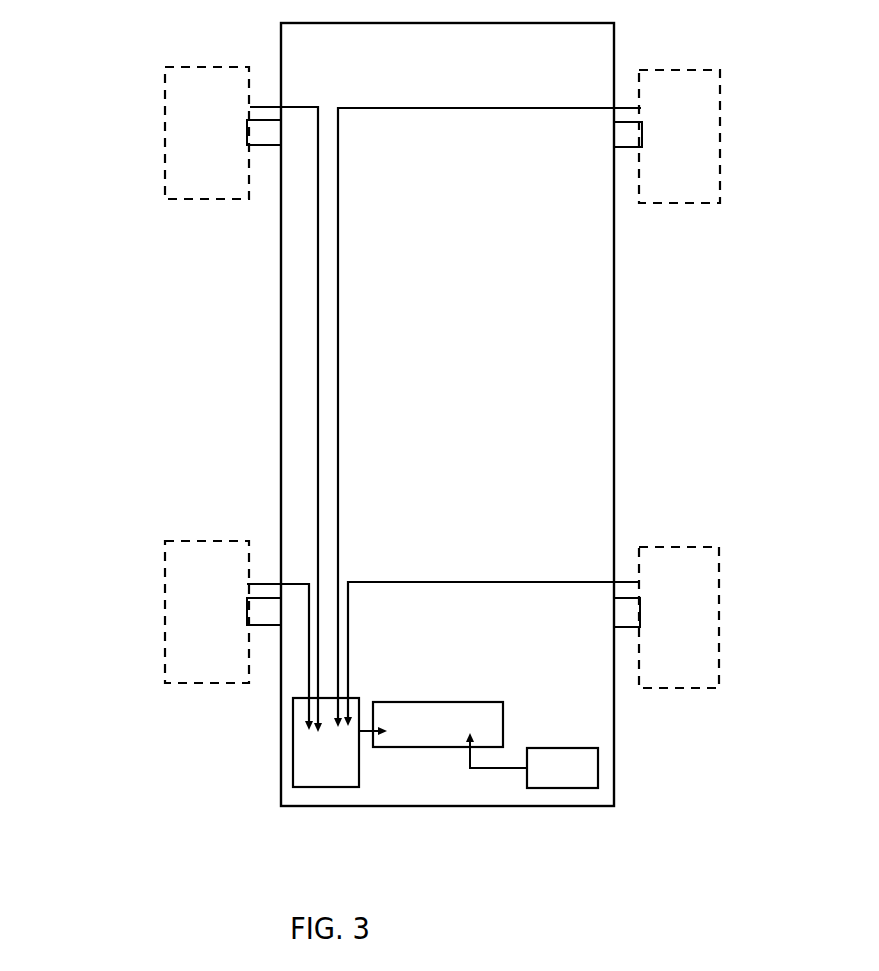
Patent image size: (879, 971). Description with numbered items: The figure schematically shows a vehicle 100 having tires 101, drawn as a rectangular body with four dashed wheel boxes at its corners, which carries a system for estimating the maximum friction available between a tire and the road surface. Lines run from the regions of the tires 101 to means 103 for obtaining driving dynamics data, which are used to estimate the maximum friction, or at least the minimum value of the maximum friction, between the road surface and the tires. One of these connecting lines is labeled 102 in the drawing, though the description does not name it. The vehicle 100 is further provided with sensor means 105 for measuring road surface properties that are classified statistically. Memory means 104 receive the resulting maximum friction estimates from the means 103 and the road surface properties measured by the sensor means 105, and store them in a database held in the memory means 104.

The vehicle 100 is at (214, 366).
The tires 101 is at (157, 201).
The sensor wiring line 102 is at (423, 582).
The means for obtaining driving dynamics data 103 is at (312, 762).
The memory means 104 is at (440, 713).
The sensor means 105 is at (585, 766).